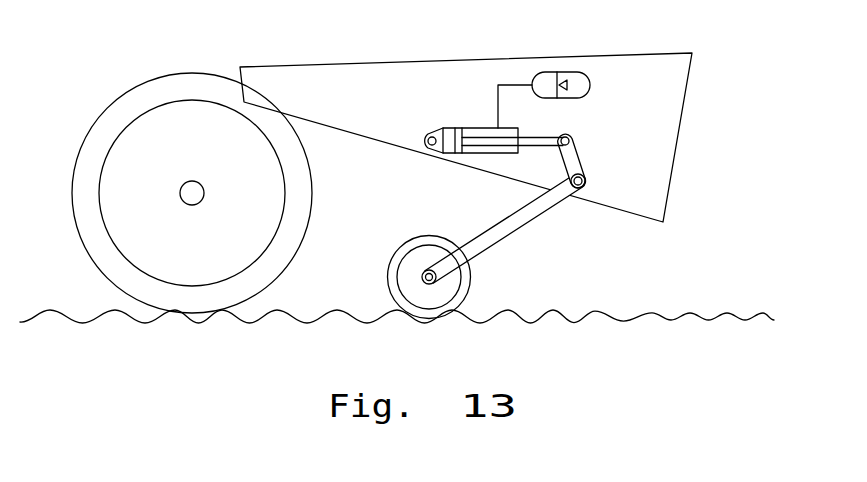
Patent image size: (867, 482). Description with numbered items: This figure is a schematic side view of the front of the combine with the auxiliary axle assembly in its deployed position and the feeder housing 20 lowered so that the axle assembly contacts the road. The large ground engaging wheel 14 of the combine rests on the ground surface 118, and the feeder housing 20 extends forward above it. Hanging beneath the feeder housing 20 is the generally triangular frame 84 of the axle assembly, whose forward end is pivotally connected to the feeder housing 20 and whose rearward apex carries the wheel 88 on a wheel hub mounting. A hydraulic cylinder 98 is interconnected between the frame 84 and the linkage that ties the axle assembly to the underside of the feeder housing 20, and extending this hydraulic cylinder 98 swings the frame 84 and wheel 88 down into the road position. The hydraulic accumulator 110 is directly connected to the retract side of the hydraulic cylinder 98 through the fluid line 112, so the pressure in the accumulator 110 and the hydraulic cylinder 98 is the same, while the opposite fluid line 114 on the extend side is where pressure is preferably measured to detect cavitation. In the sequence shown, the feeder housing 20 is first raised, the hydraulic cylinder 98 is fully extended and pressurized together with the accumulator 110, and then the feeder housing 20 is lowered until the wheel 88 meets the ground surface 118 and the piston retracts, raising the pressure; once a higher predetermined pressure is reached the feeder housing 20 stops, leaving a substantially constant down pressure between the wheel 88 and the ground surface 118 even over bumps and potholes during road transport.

The ground engaging wheel 14 is at (100, 118).
The feeder housing 20 is at (392, 62).
The frame 84 is at (499, 243).
The wheel 88 is at (391, 270).
The hydraulic cylinder 98 is at (503, 156).
The hydraulic accumulator 110 is at (586, 99).
The fluid line 112 is at (497, 91).
The fluid line 114 is at (452, 128).
The ground surface 118 is at (697, 316).